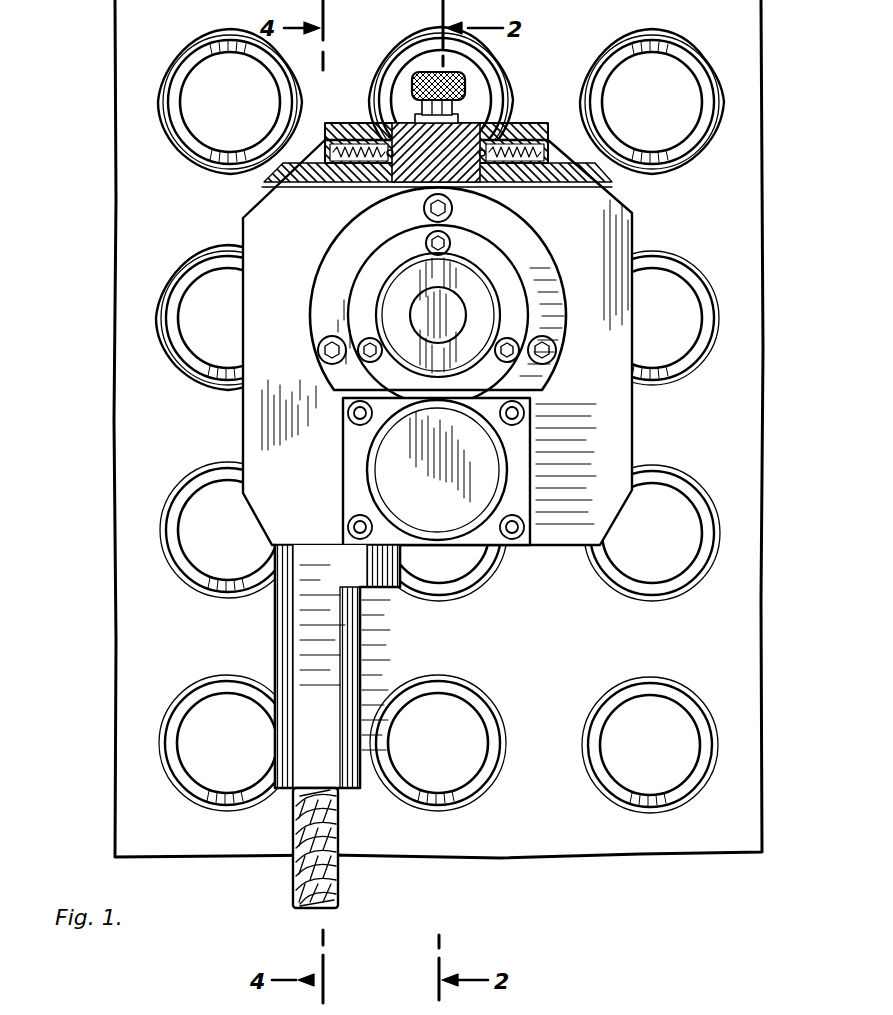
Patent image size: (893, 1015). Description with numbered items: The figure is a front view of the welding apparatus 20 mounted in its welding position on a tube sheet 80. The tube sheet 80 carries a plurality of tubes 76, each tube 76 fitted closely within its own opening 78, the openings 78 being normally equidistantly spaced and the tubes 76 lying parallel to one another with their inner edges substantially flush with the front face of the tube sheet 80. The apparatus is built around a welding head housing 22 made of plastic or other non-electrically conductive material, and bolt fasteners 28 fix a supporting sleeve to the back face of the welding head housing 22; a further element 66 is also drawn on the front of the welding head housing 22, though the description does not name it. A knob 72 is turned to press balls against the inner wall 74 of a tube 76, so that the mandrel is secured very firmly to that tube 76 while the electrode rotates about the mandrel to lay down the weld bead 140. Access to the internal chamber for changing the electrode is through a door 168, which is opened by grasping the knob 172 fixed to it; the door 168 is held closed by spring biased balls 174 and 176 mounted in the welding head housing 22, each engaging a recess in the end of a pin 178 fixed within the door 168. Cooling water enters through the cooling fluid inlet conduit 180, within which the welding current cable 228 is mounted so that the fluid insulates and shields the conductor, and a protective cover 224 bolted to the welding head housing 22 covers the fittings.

The welding apparatus 20 is at (252, 183).
The welding head housing 22 is at (605, 213).
The bolt fasteners 28 is at (424, 210).
The circular boss 66 is at (558, 262).
The knob 72 is at (424, 334).
The inner wall 74 is at (183, 103).
The tube 76 is at (172, 126).
The opening 78 is at (690, 578).
The tube sheet 80 is at (740, 742).
The weld bead 140 is at (222, 36).
The door 168 is at (411, 86).
The knob 172 is at (405, 125).
The spring biased ball 174 is at (374, 125).
The spring biased ball 176 is at (505, 140).
The pin 178 is at (483, 150).
The cooling fluid inlet conduit 180 is at (340, 882).
The protective cover 224 is at (278, 632).
The cable 228 is at (312, 874).